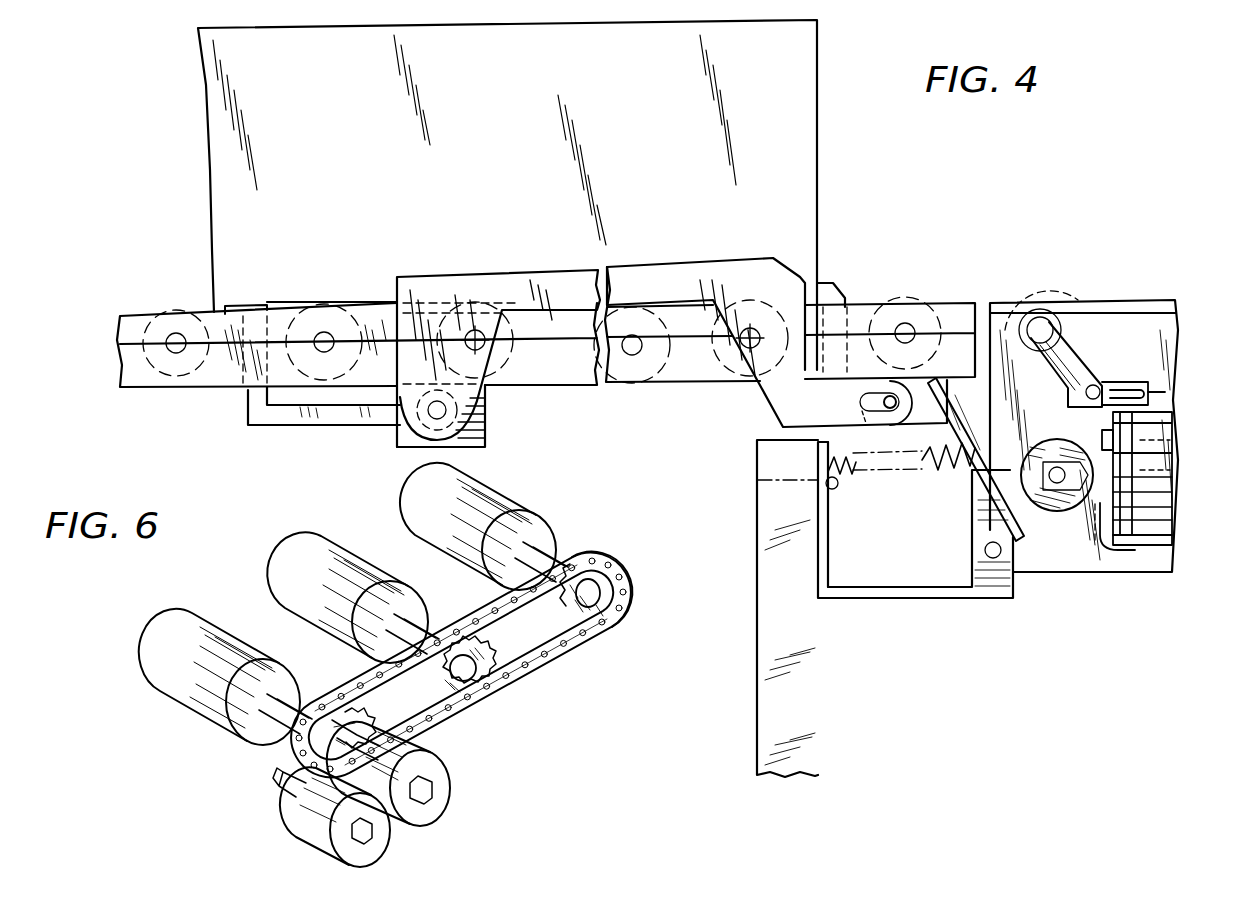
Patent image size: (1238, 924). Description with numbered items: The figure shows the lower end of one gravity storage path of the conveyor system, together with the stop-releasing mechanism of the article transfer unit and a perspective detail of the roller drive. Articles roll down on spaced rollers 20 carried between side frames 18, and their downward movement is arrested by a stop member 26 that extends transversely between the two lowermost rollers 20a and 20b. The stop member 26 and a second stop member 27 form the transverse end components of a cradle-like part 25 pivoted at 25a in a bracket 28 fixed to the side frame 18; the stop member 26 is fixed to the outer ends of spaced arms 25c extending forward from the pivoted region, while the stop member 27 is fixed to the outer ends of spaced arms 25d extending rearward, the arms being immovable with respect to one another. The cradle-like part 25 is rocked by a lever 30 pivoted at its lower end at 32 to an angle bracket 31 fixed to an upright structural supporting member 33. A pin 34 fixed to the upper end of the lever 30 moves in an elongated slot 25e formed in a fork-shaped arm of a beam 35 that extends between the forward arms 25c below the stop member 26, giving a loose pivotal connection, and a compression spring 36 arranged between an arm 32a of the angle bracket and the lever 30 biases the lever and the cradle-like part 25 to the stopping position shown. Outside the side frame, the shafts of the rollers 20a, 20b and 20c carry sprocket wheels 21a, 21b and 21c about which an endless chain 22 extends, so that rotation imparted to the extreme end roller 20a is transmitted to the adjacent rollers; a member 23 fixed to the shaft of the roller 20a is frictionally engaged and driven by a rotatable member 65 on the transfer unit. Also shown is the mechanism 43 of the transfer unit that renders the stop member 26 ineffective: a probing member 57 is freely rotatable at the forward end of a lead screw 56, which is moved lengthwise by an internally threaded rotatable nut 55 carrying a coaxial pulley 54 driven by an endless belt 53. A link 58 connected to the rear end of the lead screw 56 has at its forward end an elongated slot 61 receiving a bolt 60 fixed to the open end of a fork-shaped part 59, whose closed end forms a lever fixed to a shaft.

In FIG. 4, the side frame 18 is at (215, 388).
In FIG. 4, the rollers 20 is at (328, 304).
In FIG. 4, the extreme end roller 20a is at (922, 302).
In FIG. 6, the extreme end roller 20a is at (175, 700).
In FIG. 6, the roller 20b is at (285, 590).
In FIG. 6, the roller 20c is at (425, 513).
In FIG. 6, the sprocket wheel 21a is at (356, 725).
In FIG. 6, the sprocket wheel 21b is at (520, 660).
In FIG. 6, the sprocket wheel 21c is at (615, 620).
In FIG. 6, the endless chain 22 is at (602, 566).
In FIG. 6, the member 23 is at (452, 779).
In FIG. 4, the cradle-like part 25 is at (497, 285).
In FIG. 4, the pivot 25a is at (430, 416).
In FIG. 4, the spaced arms 25c is at (815, 400).
In FIG. 4, the spaced arms 25d is at (312, 426).
In FIG. 4, the slot 25e is at (872, 392).
In FIG. 4, the stop member 26 is at (840, 283).
In FIG. 4, the stop member 27 is at (262, 306).
In FIG. 4, the bracket 28 is at (487, 442).
In FIG. 4, the lever 30 is at (972, 430).
In FIG. 4, the angle bracket 31 is at (1000, 556).
In FIG. 4, the pivot 32 is at (912, 599).
In FIG. 4, the arm 32a is at (830, 556).
In FIG. 4, the upright structural supporting member 33 is at (821, 716).
In FIG. 4, the pin 34 is at (908, 424).
In FIG. 4, the beam 35 is at (866, 424).
In FIG. 4, the compression spring 36 is at (926, 470).
In FIG. 4, the mechanism 43 is at (1175, 506).
In FIG. 4, the endless belt 53 is at (1175, 542).
In FIG. 4, the pulley 54 is at (1176, 420).
In FIG. 4, the internally threaded rotatable nut 55 is at (1102, 468).
In FIG. 4, the lead screw 56 is at (1106, 535).
In FIG. 4, the probing member 57 is at (1066, 512).
In FIG. 4, the link 58 is at (1150, 398).
In FIG. 4, the fork-shaped part 59 is at (1080, 358).
In FIG. 4, the bolt 60 is at (1090, 400).
In FIG. 4, the elongated slot 61 is at (1140, 384).
In FIG. 6, the rotatable member 65 is at (316, 832).